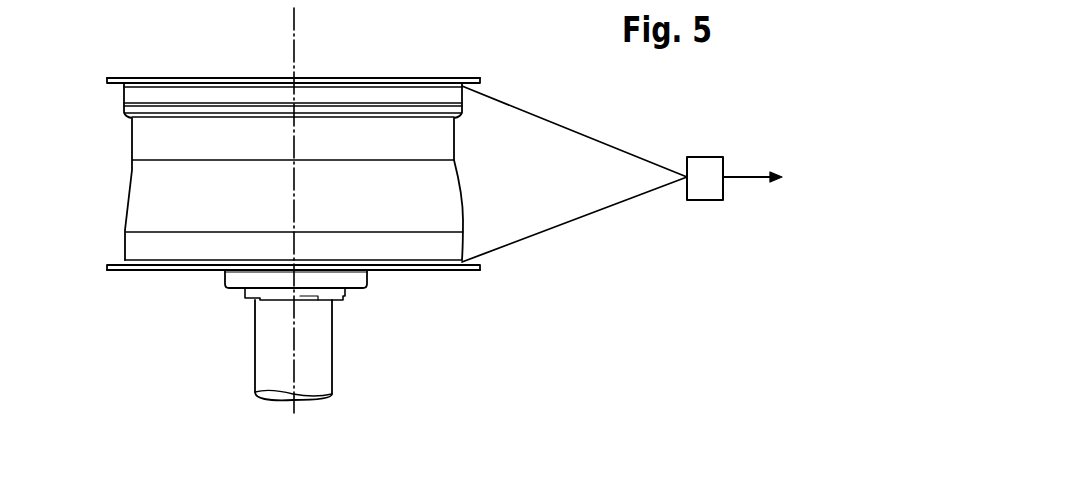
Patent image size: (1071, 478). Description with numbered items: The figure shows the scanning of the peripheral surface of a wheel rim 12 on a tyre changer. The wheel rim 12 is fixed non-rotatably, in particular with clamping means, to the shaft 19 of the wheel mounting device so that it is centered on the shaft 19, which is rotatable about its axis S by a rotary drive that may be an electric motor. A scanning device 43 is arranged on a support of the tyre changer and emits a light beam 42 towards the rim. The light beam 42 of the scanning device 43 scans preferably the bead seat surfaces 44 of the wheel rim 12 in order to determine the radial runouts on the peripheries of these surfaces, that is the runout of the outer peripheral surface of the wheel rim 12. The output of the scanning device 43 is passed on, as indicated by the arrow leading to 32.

The wheel rim 12 is at (224, 78).
The shaft 19 is at (318, 358).
The light beam 42 is at (577, 132).
The scanning device 43 is at (703, 170).
The bead seat surfaces 44 is at (120, 94).
The control unit (not shown) 32 is at (781, 177).
The axis of rotation S is at (294, 33).